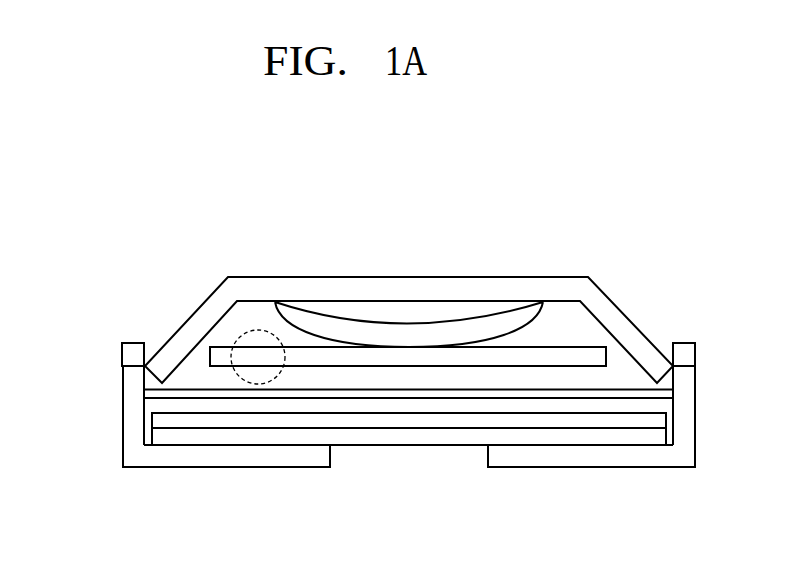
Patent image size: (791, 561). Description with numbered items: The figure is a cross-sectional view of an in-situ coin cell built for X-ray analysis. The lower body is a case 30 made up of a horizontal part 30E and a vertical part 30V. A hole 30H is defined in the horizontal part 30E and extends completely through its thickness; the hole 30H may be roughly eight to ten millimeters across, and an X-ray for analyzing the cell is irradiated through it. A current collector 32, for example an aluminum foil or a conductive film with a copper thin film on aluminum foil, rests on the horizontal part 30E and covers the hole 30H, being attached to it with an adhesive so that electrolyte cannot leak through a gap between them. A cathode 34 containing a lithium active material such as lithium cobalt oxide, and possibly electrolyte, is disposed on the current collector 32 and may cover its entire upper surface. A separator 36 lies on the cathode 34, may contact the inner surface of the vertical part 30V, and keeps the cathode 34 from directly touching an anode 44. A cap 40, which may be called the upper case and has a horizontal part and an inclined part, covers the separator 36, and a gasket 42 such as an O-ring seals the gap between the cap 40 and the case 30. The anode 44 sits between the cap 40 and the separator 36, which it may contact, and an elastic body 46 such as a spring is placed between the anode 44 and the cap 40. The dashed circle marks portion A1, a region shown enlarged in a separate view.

The case 30 is at (354, 438).
The vertical part 30V is at (128, 419).
The horizontal part 30E is at (162, 460).
The hole 30H is at (338, 461).
The current collector 32 is at (583, 437).
The cathode 34 is at (538, 422).
The separator 36 is at (250, 393).
The cap 40 is at (303, 285).
The gasket 42 is at (133, 352).
The anode 44 is at (588, 346).
The elastic body 46 is at (497, 327).
The portion A1 is at (238, 338).